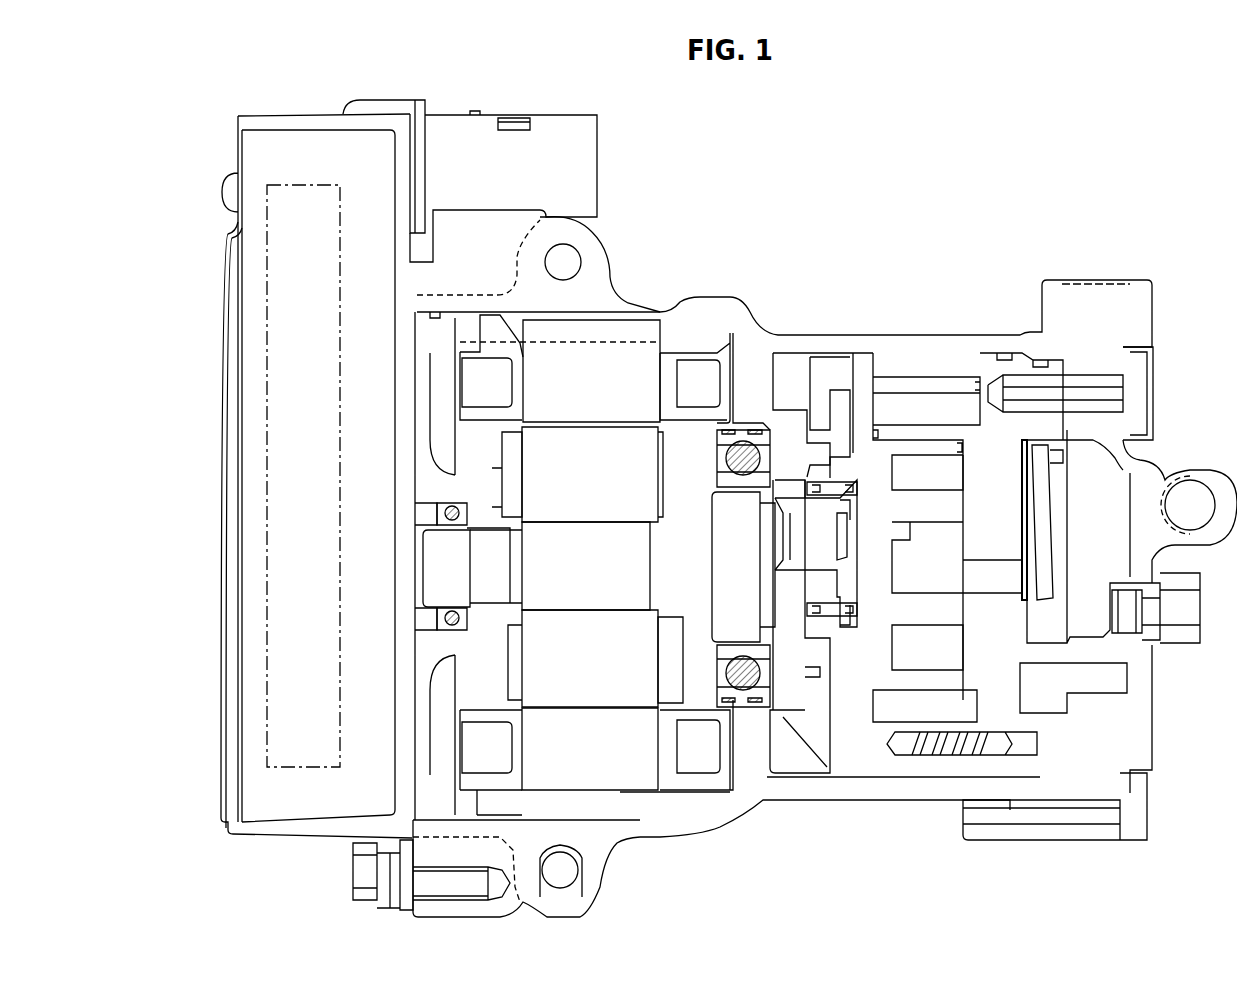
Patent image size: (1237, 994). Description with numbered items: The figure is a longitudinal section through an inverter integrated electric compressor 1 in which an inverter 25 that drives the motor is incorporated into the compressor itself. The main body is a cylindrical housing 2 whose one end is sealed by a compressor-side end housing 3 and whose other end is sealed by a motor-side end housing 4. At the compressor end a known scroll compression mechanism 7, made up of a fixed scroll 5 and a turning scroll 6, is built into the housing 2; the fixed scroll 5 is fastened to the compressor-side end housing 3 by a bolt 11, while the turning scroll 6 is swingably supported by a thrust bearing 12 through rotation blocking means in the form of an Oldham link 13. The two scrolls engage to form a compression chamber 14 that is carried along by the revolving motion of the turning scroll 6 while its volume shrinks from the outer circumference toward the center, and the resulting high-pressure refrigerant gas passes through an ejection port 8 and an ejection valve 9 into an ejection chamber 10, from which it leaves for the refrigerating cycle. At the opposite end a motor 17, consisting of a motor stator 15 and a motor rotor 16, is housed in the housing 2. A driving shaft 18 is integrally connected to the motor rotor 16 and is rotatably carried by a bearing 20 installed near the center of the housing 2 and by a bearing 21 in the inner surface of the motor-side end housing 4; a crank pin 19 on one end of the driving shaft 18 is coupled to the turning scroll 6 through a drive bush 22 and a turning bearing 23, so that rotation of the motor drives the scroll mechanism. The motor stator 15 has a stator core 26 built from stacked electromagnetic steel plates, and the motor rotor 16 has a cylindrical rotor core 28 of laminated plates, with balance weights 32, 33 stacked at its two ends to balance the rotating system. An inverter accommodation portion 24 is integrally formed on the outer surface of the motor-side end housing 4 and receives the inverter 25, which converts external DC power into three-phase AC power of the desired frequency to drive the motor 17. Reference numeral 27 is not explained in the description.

The electric compressor 1 is at (784, 254).
The housing 2 is at (701, 294).
The compressor-side end housing 3 is at (1143, 715).
The motor-side end housing 4 is at (410, 740).
The fixed scroll 5 is at (998, 690).
The turning scroll 6 is at (855, 690).
The scroll compression mechanism 7 is at (922, 378).
The ejection port 8 is at (990, 560).
The ejection valve 9 is at (1032, 572).
The ejection chamber 10 is at (1092, 472).
The bolt 11 is at (1105, 372).
The thrust bearing 12 is at (798, 775).
The Oldham link 13 is at (842, 406).
The compression chamber 14 is at (945, 640).
The motor stator 15 is at (559, 735).
The motor rotor 16 is at (592, 495).
The motor 17 is at (627, 314).
The driving shaft 18 is at (626, 540).
The crank pin 19 is at (800, 533).
The bearing 20 is at (731, 457).
The bearing 21 is at (455, 624).
The drive bush 22 is at (815, 583).
The turning bearing 23 is at (835, 616).
The inverter accommodation portion 24 is at (302, 130).
The inverter 25 is at (262, 472).
The stator core 26 is at (625, 768).
The coil 27 is at (668, 746).
The rotor core 28 is at (588, 442).
The balance weight 32 is at (507, 473).
The balance weight 33 is at (673, 670).